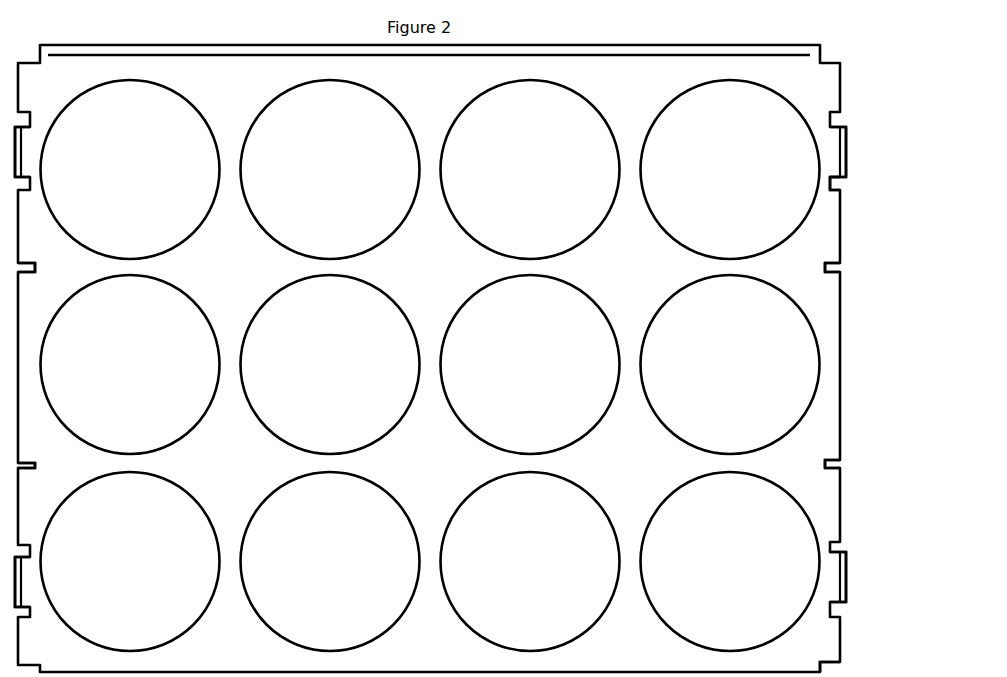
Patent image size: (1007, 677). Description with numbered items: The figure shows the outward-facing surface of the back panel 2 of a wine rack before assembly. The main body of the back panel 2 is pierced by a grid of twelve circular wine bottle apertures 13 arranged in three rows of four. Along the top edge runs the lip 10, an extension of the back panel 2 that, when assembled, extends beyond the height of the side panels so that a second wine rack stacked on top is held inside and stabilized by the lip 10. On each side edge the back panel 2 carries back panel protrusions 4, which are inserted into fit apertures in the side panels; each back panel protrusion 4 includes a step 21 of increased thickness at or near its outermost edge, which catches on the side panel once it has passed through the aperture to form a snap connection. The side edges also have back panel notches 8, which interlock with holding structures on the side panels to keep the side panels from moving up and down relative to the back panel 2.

The back panel 2 is at (623, 72).
The lip 10 is at (723, 55).
The wine bottle aperture 13 is at (532, 80).
The step 21 is at (844, 136).
The back panel protrusion 4 is at (835, 148).
The back panel notch 8 is at (832, 182).